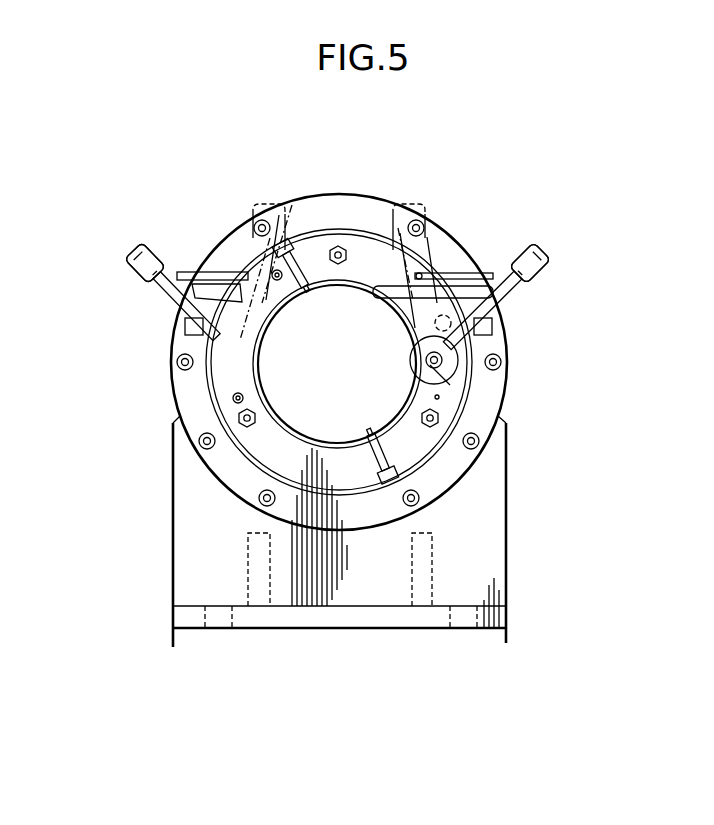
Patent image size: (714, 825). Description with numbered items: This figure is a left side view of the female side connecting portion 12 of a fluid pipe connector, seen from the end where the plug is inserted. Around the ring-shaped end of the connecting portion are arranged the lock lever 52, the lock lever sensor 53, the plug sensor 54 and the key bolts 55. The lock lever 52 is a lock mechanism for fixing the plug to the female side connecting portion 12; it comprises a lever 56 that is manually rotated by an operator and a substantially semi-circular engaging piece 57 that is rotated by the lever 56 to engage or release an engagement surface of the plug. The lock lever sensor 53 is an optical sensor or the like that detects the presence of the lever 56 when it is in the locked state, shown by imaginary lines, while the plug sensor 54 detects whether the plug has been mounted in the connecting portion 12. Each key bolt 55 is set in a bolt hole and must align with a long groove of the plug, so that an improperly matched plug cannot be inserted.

The female side connecting portion 12 is at (398, 168).
The lock lever 52 is at (133, 232).
The lock lever sensor 53 is at (229, 272).
The plug sensor 54 is at (208, 290).
The key bolt 55 is at (288, 242).
The lever 56 is at (128, 270).
The engaging piece 57 is at (452, 368).